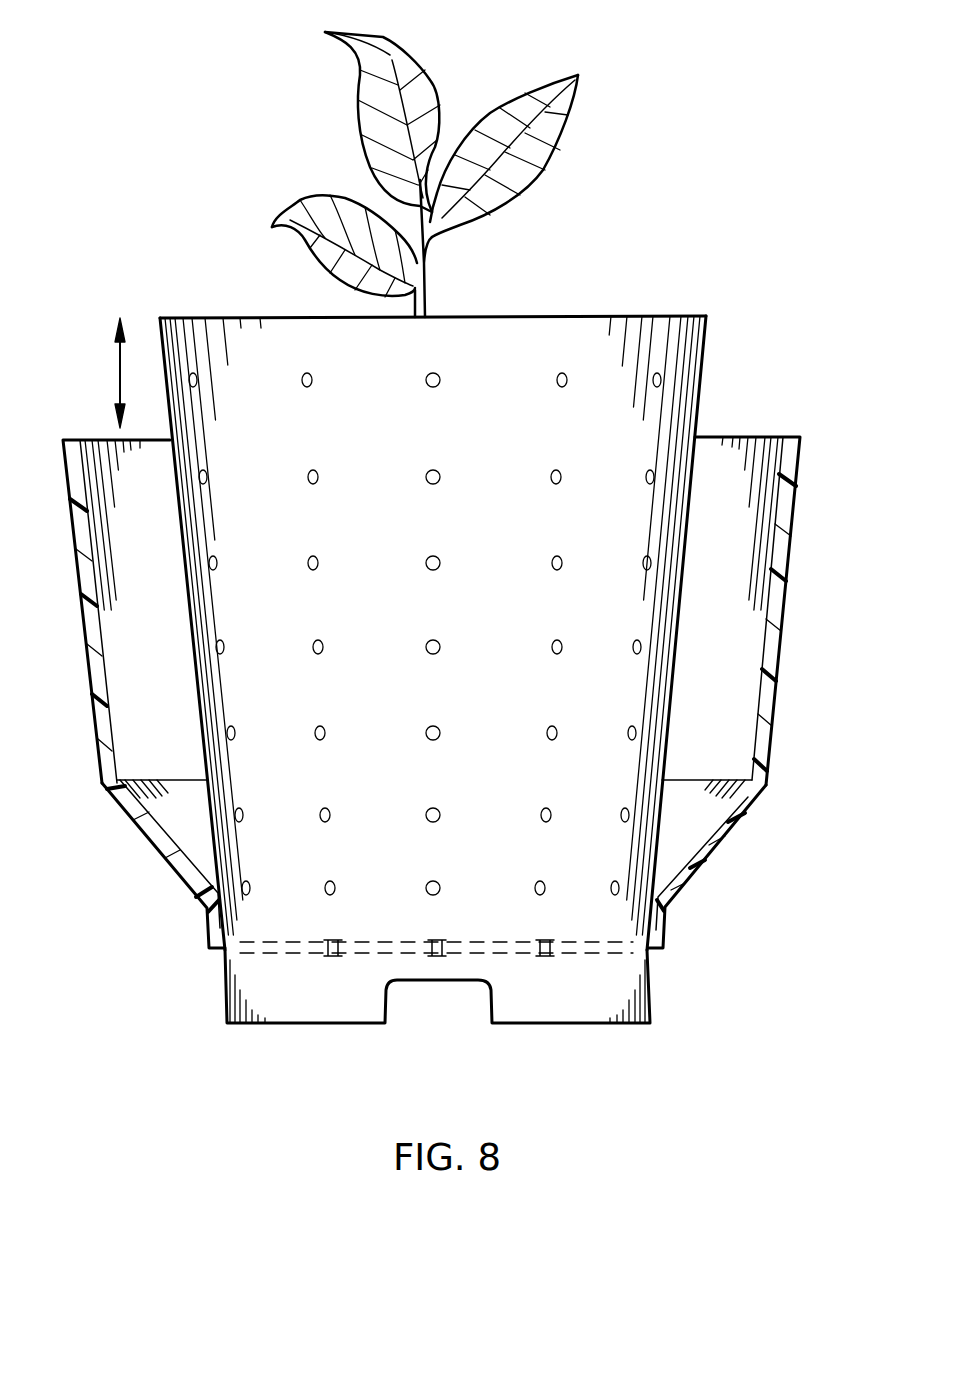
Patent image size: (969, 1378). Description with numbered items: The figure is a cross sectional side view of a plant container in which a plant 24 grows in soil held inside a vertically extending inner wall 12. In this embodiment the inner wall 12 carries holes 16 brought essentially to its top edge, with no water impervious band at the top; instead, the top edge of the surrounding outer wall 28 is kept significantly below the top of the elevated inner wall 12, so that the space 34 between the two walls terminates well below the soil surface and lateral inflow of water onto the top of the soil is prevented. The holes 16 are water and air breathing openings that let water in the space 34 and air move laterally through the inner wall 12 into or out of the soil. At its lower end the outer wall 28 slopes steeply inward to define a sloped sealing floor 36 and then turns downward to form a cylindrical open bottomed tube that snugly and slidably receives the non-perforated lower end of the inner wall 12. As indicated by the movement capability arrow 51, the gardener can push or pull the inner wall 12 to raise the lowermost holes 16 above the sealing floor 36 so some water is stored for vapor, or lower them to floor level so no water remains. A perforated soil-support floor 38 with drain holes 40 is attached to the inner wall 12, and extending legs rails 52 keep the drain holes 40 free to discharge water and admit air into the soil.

The inner wall 12 is at (705, 347).
The holes 16 is at (430, 560).
The plant 24 is at (363, 147).
The outer wall 28 is at (775, 722).
The space 34 is at (736, 480).
The sealing floor 36 is at (160, 853).
The perforated floor 38 is at (383, 943).
The drain holes 40 is at (545, 947).
The movement capability arrow 51 is at (115, 372).
The legs rails 52 is at (650, 982).